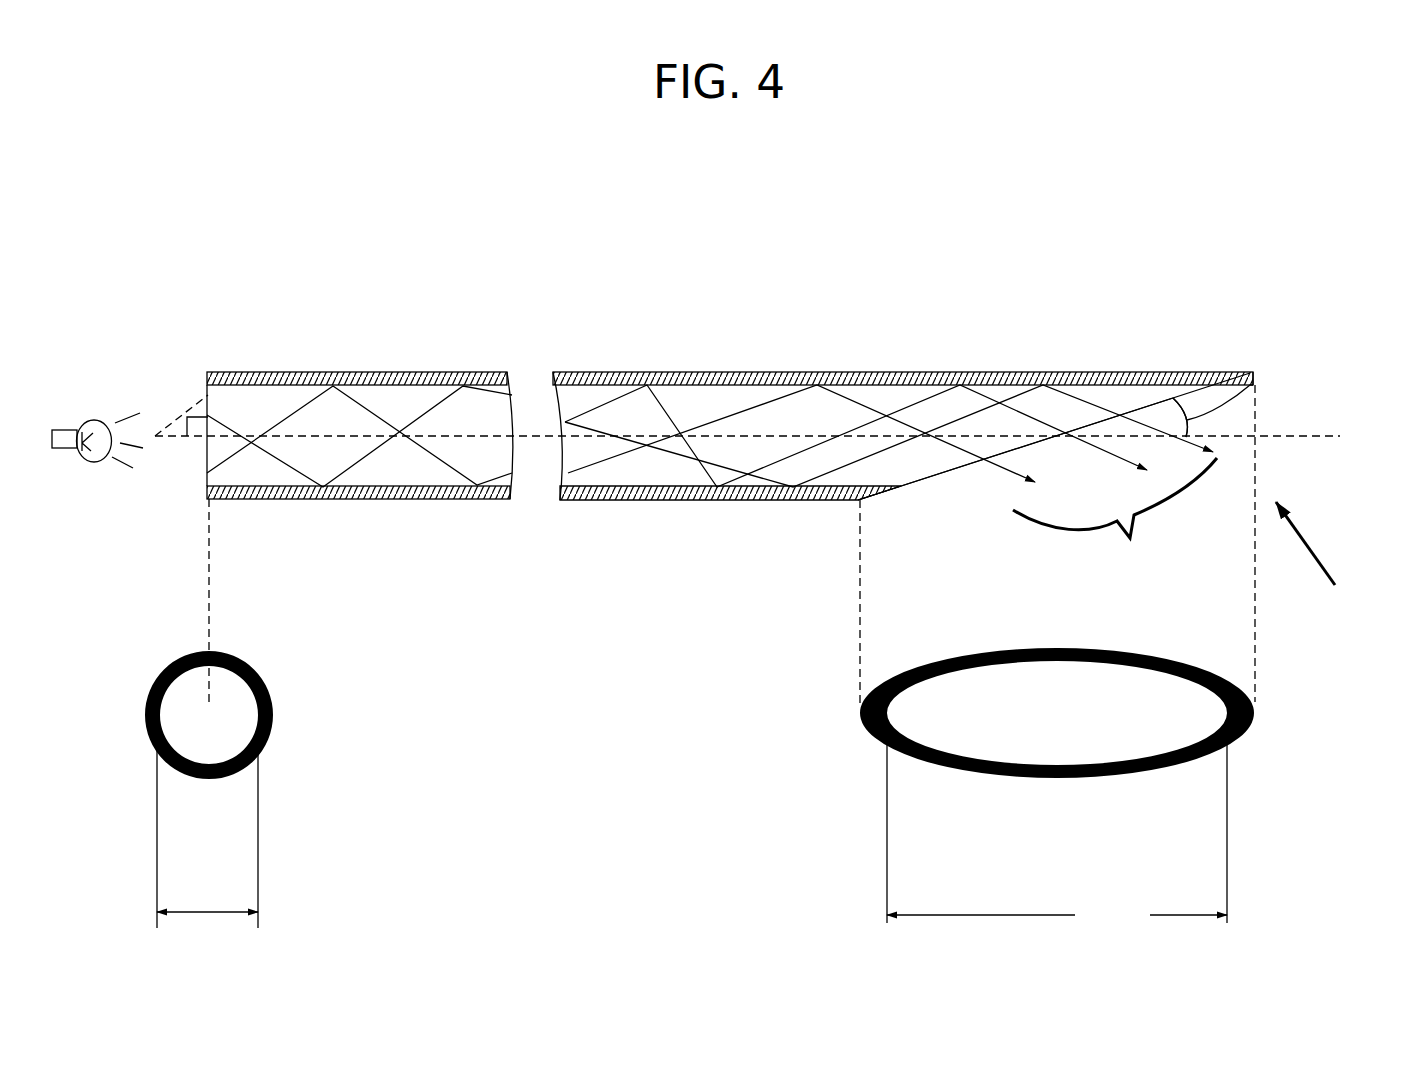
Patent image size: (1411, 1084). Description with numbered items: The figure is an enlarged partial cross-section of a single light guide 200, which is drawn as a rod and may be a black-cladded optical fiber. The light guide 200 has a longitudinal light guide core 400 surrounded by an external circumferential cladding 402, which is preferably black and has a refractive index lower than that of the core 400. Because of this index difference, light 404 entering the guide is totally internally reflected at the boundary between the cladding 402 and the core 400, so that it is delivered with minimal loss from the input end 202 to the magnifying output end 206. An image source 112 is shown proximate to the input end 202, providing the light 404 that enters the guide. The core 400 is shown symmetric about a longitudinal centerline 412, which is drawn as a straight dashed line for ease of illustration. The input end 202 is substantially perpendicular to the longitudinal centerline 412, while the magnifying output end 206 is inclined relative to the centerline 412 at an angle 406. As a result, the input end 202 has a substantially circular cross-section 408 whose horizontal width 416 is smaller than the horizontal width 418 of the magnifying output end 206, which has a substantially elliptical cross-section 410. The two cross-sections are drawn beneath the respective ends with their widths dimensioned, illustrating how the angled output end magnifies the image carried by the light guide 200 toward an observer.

The light guide 200 is at (1131, 314).
The light guide core 400 is at (490, 405).
The cladding 402 is at (395, 372).
The light 404 is at (130, 470).
The image source 112 is at (92, 419).
The input end 202 is at (208, 478).
The magnifying output end 206 is at (917, 480).
The angle 406 is at (1256, 384).
The longitudinal centerline 412 is at (775, 437).
The circular cross-section 408 is at (275, 706).
The elliptical cross-section 410 is at (1260, 721).
The horizontal width 416 is at (207, 837).
The horizontal width 418 is at (1057, 835).